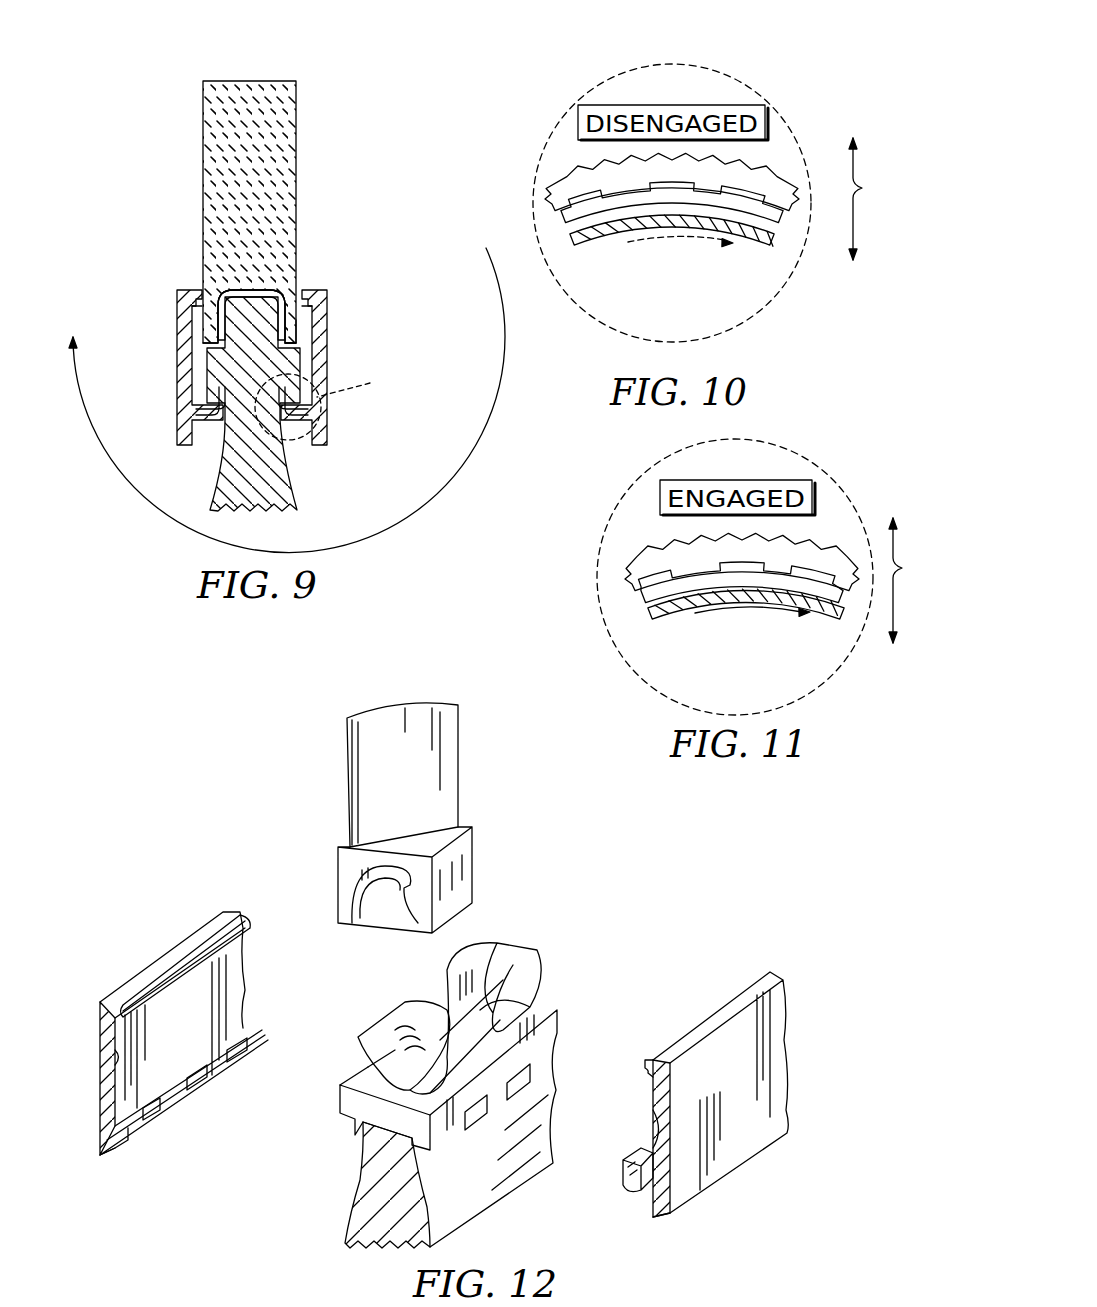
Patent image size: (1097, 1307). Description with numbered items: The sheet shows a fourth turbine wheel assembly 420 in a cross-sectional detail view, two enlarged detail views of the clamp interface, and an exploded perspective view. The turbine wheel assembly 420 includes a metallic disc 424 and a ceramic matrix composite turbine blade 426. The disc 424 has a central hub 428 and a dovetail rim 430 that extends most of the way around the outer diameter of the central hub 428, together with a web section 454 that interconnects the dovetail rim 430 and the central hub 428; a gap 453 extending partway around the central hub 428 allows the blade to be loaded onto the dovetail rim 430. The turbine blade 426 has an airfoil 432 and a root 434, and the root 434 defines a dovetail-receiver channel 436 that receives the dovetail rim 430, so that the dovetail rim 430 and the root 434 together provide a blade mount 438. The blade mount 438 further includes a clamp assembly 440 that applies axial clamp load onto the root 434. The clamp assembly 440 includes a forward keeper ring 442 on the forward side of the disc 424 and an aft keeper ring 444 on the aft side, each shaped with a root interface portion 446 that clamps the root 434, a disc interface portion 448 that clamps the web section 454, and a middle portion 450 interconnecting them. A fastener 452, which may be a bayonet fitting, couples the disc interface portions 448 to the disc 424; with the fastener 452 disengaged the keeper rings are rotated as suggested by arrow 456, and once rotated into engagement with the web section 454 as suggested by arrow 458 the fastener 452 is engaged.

In FIG. 9, the turbine wheel assembly 420 is at (192, 110).
In FIG. 9, the disc 424 is at (197, 488).
In FIG. 12, the disc 424 is at (303, 1207).
In FIG. 9, the turbine blade 426 is at (318, 108).
In FIG. 12, the turbine blade 426 is at (483, 783).
In FIG. 9, the central hub 428 is at (297, 487).
In FIG. 12, the central hub 428 is at (425, 1205).
In FIG. 9, the dovetail rim 430 is at (293, 290).
In FIG. 12, the dovetail rim 430 is at (480, 987).
In FIG. 9, the airfoil 432 is at (297, 163).
In FIG. 12, the airfoil 432 is at (440, 757).
In FIG. 9, the root 434 is at (293, 322).
In FIG. 12, the root 434 is at (465, 870).
In FIG. 9, the dovetail-receiver channel 436 is at (227, 283).
In FIG. 12, the dovetail-receiver channel 436 is at (397, 920).
In FIG. 9, the blade mount 438 is at (482, 213).
In FIG. 9, the clamp assembly 440 is at (290, 384).
In FIG. 9, the forward keeper ring 442 is at (175, 343).
In FIG. 12, the forward keeper ring 442 is at (102, 1027).
In FIG. 9, the aft keeper ring 444 is at (332, 320).
In FIG. 12, the aft keeper ring 444 is at (743, 1092).
In FIG. 12, the root interface portion 446 is at (140, 1003).
In FIG. 9, the disc interface portion 448 is at (252, 401).
In FIG. 10, the disc interface portion 448 is at (750, 237).
In FIG. 11, the disc interface portion 448 is at (779, 639).
In FIG. 12, the disc interface portion 448 is at (157, 1107).
In FIG. 12, the middle portion 450 is at (120, 1057).
In FIG. 10, the fastener 452 is at (885, 199).
In FIG. 11, the fastener 452 is at (925, 580).
In FIG. 12, the fastener 452 is at (137, 1160).
In FIG. 12, the gap 453 is at (537, 950).
In FIG. 9, the web section 454 is at (307, 388).
In FIG. 10, the web section 454 is at (770, 175).
In FIG. 11, the web section 454 is at (767, 546).
In FIG. 12, the web section 454 is at (335, 1117).
In FIG. 10, the arrow 456 is at (665, 238).
In FIG. 11, the arrow 458 is at (752, 642).